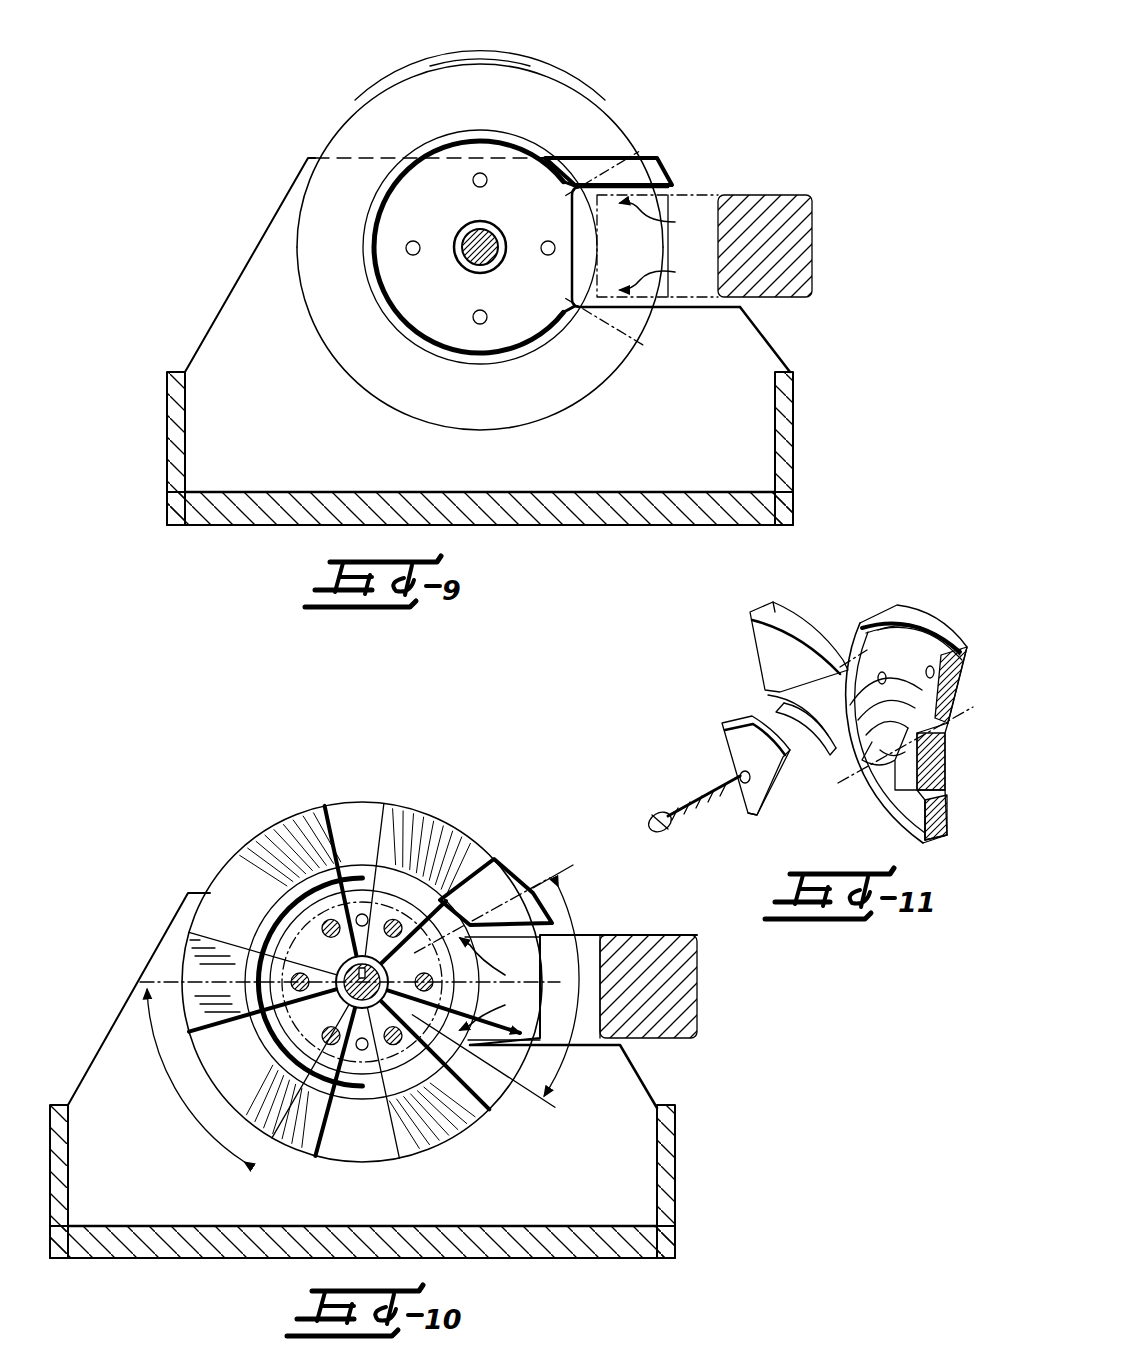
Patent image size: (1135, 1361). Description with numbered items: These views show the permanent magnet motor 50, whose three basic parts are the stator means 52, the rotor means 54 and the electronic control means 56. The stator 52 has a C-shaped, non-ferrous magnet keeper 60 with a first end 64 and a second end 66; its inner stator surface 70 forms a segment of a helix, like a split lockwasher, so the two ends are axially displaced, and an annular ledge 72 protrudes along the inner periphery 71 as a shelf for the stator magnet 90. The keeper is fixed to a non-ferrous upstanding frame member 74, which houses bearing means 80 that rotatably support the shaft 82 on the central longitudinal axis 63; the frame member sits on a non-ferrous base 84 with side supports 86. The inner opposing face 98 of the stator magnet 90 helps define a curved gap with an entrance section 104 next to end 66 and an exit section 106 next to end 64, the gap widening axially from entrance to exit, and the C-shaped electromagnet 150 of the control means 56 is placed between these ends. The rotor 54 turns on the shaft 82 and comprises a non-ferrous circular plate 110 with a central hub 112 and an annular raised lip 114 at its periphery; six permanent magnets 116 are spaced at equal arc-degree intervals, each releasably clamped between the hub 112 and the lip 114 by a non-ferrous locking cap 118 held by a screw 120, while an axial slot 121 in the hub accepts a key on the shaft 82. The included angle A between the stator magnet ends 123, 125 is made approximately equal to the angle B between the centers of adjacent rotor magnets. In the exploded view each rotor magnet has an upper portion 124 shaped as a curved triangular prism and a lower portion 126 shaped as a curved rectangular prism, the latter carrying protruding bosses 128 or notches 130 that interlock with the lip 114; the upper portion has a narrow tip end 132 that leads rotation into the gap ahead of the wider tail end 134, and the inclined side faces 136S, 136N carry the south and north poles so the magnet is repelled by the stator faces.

In FIG. 9, the permanent magnet motor 50 is at (580, 45).
In FIG. 9, the stator means 52 is at (477, 58).
In FIG. 10, the rotor means 54 is at (490, 772).
In FIG. 9, the electronic control means 56 is at (818, 225).
In FIG. 10, the electronic control means 56 is at (718, 893).
In FIG. 9, the magnet keeper 60 is at (430, 65).
In FIG. 9, the central longitudinal axis 63 is at (487, 228).
In FIG. 9, the first end 64 is at (657, 183).
In FIG. 10, the first end 64 is at (496, 892).
In FIG. 9, the second end 66 is at (645, 305).
In FIG. 10, the second end 66 is at (581, 990).
In FIG. 9, the inner stator surface 70 is at (437, 405).
In FIG. 9, the inner periphery 71 is at (380, 262).
In FIG. 9, the annular ledge 72 is at (372, 298).
In FIG. 10, the annular ledge 72 is at (360, 860).
In FIG. 9, the upstanding frame member 74 is at (292, 431).
In FIG. 10, the upstanding frame member 74 is at (577, 1201).
In FIG. 9, the bearing means 80 is at (500, 262).
In FIG. 9, the shaft 82 is at (478, 272).
In FIG. 10, the shaft 82 is at (395, 935).
In FIG. 9, the base 84 is at (598, 510).
In FIG. 10, the base 84 is at (522, 1248).
In FIG. 9, the side supports 86 is at (167, 466).
In FIG. 10, the side supports 86 is at (62, 1172).
In FIG. 10, the stator magnet 90 is at (375, 800).
In FIG. 10, the inner opposing face 98 is at (350, 835).
In FIG. 9, the entrance section 104 is at (676, 273).
In FIG. 10, the entrance section 104 is at (501, 1008).
In FIG. 9, the exit section 106 is at (676, 220).
In FIG. 10, the exit section 106 is at (501, 964).
In FIG. 10, the circular plate 110 is at (385, 890).
In FIG. 11, the circular plate 110 is at (930, 625).
In FIG. 11, the central hub 112 is at (888, 785).
In FIG. 11, the annular raised lip 114 is at (872, 630).
In FIG. 10, the permanent magnets 116 is at (525, 850).
In FIG. 11, the permanent magnets 116 is at (748, 620).
In FIG. 10, the locking caps 118 is at (325, 875).
In FIG. 11, the locking caps 118 is at (735, 750).
In FIG. 10, the screw 120 is at (312, 900).
In FIG. 11, the screw 120 is at (640, 822).
In FIG. 11, the axial slot 121 is at (855, 750).
In FIG. 9, the stator magnet end 123 is at (628, 155).
In FIG. 10, the stator magnet end 123 is at (512, 895).
In FIG. 10, the upper portion 124 is at (440, 808).
In FIG. 11, the upper portion 124 is at (790, 612).
In FIG. 9, the stator magnet end 125 is at (642, 352).
In FIG. 10, the stator magnet end 125 is at (500, 1095).
In FIG. 10, the lower portion 126 is at (420, 868).
In FIG. 11, the lower portion 126 is at (762, 695).
In FIG. 11, the protruding bosses 128 is at (822, 680).
In FIG. 11, the notches 130 is at (772, 712).
In FIG. 11, the tip end 132 is at (840, 610).
In FIG. 11, the tail end 134 is at (742, 640).
In FIG. 10, the side face 136N is at (475, 866).
In FIG. 11, the side face 136N is at (760, 672).
In FIG. 11, the side face 136S is at (795, 605).
In FIG. 9, the C-shaped electromagnet 150 is at (758, 195).
In FIG. 10, the included arc-degree angle A is at (565, 991).
In FIG. 10, the arc-degree angle B is at (196, 1076).